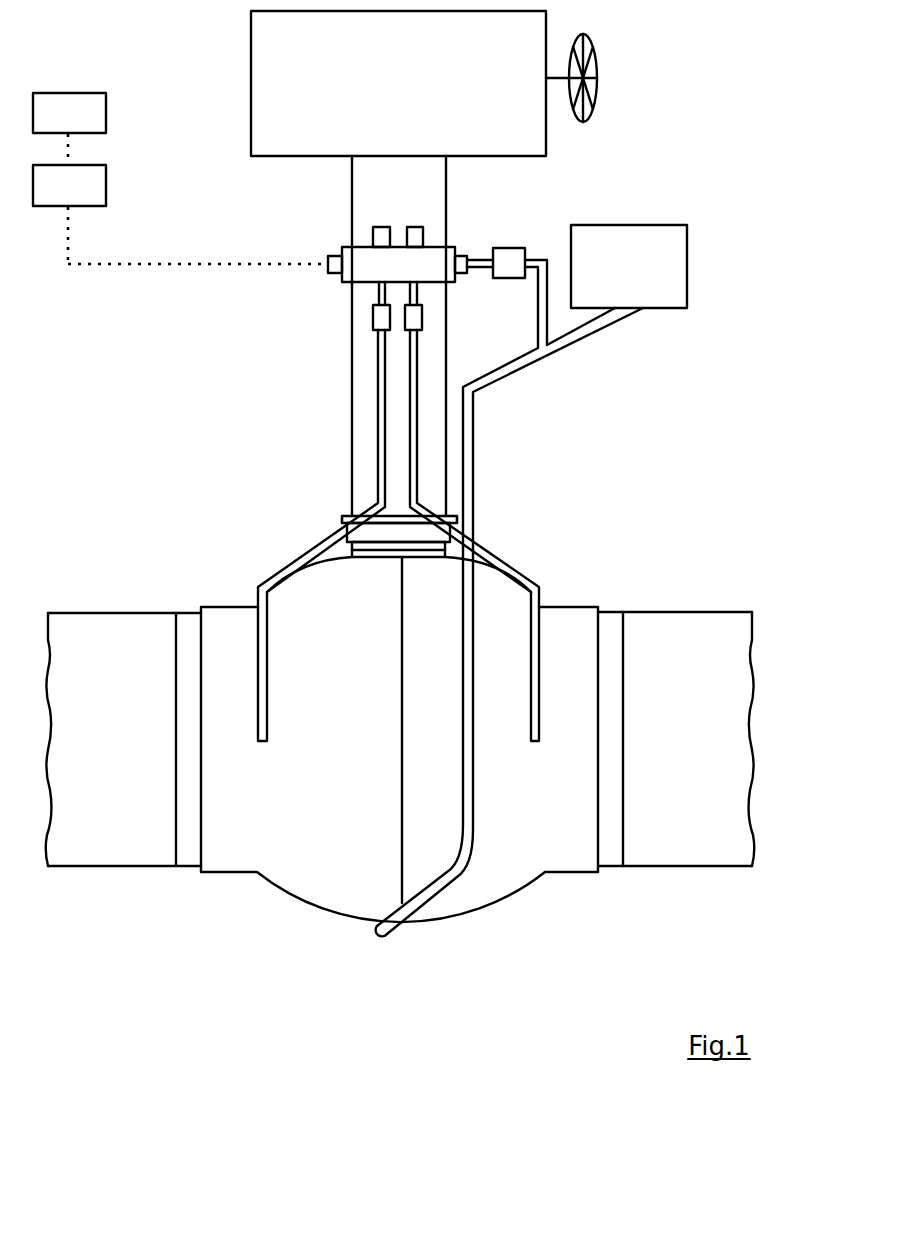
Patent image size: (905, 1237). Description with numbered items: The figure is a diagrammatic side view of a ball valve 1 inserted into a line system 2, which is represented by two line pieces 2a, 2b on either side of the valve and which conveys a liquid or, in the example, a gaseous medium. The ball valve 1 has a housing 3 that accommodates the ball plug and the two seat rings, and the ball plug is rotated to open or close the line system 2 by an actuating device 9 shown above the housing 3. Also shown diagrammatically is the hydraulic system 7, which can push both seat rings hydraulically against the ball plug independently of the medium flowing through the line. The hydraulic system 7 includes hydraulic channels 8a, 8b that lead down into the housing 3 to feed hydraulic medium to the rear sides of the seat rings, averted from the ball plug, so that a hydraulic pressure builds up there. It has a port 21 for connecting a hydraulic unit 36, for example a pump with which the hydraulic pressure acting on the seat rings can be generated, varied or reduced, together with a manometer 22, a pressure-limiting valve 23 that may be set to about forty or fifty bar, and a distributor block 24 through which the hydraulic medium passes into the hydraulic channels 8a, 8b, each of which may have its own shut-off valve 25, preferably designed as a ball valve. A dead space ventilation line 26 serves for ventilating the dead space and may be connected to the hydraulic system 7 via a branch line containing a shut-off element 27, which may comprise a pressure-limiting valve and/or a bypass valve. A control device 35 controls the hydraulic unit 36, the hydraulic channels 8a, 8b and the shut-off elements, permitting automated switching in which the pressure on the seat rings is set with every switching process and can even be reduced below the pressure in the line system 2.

The ball valve 1 is at (399, 697).
The line system 2 is at (406, 669).
The line piece 2a is at (672, 638).
The line piece 2b is at (112, 638).
The housing 3 is at (322, 590).
The hydraulic system 7 is at (342, 277).
The hydraulic channel 8a is at (417, 370).
The hydraulic channel 8b is at (378, 427).
The actuating device 9 is at (430, 188).
The port 21 is at (328, 255).
The manometer 22 is at (377, 236).
The pressure-limiting valve 23 is at (414, 238).
The distributor block 24 is at (368, 262).
The shut-off valve 25 is at (413, 318).
The dead space ventilation line 26 is at (470, 453).
The shut-off element 27 is at (509, 262).
The control device 35 is at (69, 113).
The hydraulic unit 36 is at (180, 199).